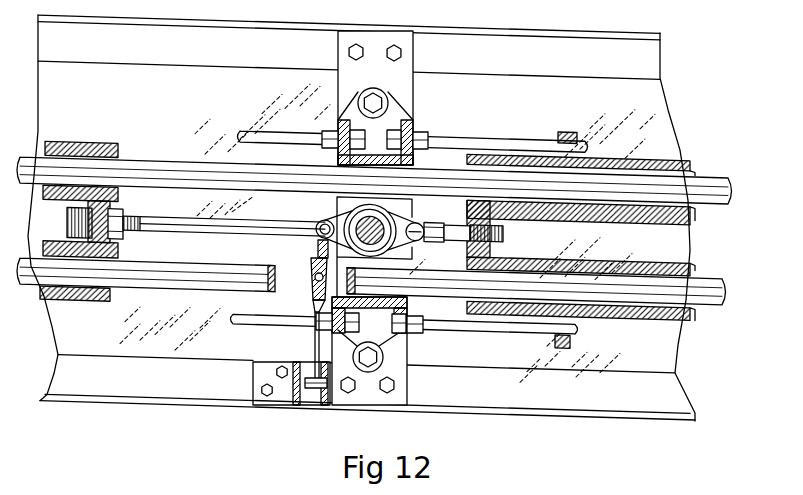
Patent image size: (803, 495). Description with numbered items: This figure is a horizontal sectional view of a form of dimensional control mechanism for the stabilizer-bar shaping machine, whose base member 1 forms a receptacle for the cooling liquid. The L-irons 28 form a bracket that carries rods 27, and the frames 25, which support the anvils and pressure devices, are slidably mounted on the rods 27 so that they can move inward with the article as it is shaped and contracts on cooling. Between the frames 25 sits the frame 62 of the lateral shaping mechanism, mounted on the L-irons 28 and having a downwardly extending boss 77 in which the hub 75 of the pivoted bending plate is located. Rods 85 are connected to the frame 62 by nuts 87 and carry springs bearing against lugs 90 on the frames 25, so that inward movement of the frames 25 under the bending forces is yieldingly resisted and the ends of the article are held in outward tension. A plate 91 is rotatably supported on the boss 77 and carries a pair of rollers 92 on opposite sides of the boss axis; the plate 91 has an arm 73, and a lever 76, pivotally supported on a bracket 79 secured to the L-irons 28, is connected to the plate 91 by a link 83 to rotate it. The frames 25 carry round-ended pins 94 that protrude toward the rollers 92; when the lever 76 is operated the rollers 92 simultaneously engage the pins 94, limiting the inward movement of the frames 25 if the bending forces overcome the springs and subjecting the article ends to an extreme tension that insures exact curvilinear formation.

The base member 1 is at (167, 343).
The frames 25 is at (522, 318).
The rods 27 is at (135, 273).
The L-irons 28 is at (458, 390).
The frame 62 is at (403, 337).
The arm 73 is at (313, 260).
The hub 75 is at (312, 282).
The lever 76 is at (312, 393).
The boss 77 is at (320, 240).
The bracket 79 is at (297, 385).
The link 83 is at (316, 350).
The rods 85 is at (458, 322).
The nuts 87 is at (408, 133).
The lugs 90 is at (558, 132).
The plate 91 is at (403, 225).
The rollers 92 is at (430, 227).
The round-ended pins 94 is at (440, 244).